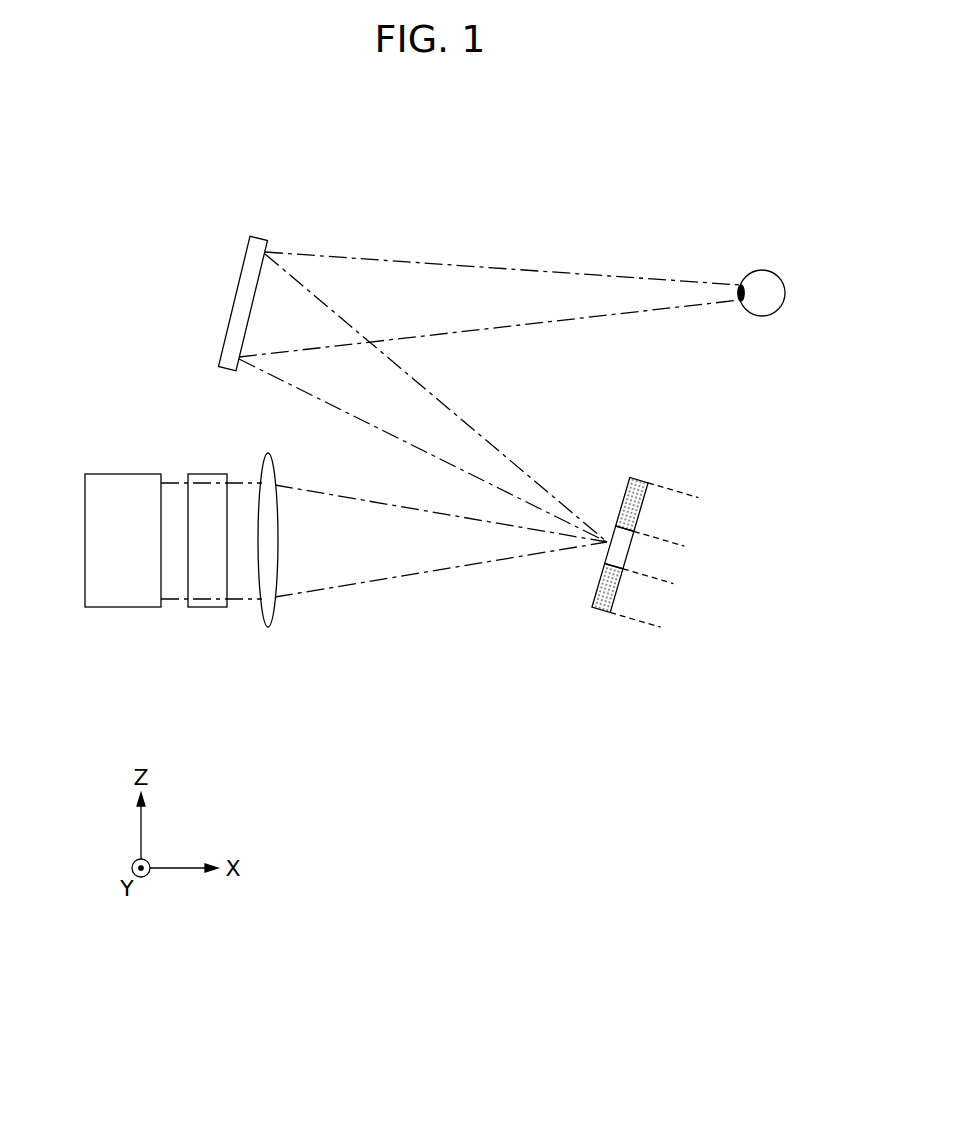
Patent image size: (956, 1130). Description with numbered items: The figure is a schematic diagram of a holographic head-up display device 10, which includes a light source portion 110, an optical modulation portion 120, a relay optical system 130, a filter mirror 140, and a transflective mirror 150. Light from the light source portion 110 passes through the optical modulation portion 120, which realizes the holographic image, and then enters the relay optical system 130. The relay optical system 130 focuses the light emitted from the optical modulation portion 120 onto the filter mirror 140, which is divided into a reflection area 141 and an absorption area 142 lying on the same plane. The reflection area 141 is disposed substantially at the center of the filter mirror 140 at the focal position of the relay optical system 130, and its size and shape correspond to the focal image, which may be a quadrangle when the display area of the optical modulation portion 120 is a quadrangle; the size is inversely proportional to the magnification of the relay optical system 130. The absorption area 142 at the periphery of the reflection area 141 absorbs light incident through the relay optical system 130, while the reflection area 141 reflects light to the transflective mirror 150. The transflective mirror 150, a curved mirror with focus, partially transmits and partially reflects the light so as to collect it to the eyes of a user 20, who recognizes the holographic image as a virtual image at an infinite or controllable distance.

The holographic head-up display device 10 is at (171, 224).
The user 20 is at (762, 317).
The light source portion 110 is at (124, 612).
The optical modulation portion 120 is at (208, 612).
The relay optical system 130 is at (268, 630).
The filter mirror 140 is at (640, 576).
The reflection area 141 is at (634, 552).
The absorption area 142 is at (635, 550).
The transflective mirror 150 is at (227, 372).